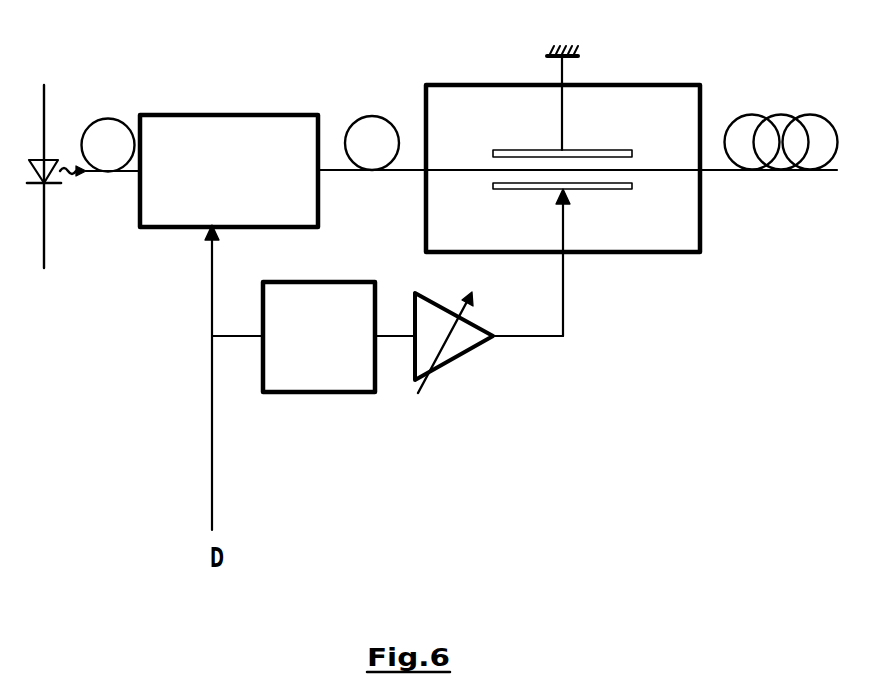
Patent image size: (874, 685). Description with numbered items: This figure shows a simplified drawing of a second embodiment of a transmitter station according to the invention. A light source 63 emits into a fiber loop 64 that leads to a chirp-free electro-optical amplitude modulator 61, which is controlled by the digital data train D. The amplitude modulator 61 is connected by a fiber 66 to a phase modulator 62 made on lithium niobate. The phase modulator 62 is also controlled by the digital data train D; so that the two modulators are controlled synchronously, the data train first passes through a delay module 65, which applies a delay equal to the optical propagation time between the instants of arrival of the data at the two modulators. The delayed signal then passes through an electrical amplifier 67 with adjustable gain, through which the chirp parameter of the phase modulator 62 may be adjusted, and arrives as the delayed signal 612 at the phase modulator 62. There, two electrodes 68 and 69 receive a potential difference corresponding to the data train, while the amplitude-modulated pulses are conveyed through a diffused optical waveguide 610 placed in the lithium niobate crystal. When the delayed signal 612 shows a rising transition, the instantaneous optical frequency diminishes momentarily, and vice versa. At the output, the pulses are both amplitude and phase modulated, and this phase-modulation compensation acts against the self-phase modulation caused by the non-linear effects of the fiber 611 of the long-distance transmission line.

The electro-optical amplitude modulator 61 is at (202, 157).
The phase modulator 62 is at (637, 120).
The laser diode 63 is at (47, 183).
The optical fiber loop 64 is at (125, 178).
The delay module 65 is at (358, 377).
The fiber 66 is at (413, 167).
The electrical amplifier 67 is at (460, 345).
The electrode 68 is at (577, 150).
The electrode 69 is at (622, 189).
The diffused optical waveguide 610 is at (438, 167).
The fiber of the long-distance transmission line 611 is at (833, 171).
The delayed signal 612 is at (557, 338).